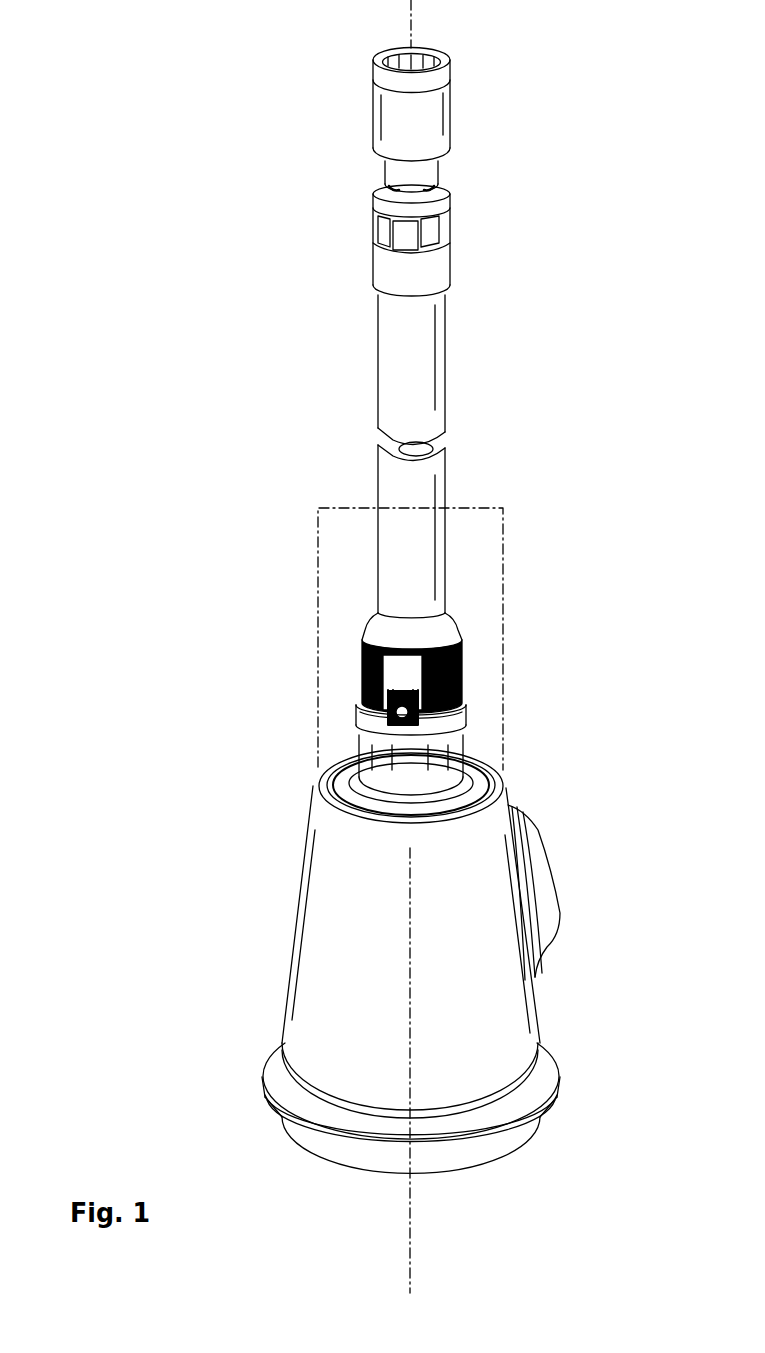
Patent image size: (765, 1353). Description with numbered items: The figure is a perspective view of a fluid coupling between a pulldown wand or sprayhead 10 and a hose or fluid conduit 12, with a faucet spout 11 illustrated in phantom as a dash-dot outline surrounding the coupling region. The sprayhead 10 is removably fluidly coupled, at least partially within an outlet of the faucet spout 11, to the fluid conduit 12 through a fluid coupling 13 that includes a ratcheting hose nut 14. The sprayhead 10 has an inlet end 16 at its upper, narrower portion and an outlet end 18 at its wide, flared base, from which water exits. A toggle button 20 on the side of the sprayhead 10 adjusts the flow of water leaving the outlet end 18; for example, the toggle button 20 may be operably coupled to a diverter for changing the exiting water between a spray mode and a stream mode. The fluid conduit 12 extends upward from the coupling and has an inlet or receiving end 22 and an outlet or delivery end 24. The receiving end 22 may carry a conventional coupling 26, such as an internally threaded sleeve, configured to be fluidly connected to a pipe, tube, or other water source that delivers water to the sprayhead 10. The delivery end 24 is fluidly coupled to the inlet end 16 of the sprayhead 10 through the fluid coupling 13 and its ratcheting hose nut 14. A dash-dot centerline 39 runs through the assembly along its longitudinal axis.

The sprayhead 10 is at (292, 915).
The faucet spout 11 is at (505, 553).
The fluid conduit 12 is at (378, 358).
The fluid coupling 13 is at (340, 707).
The ratcheting hose nut 14 is at (463, 673).
The inlet end 16 is at (478, 732).
The outlet end 18 is at (508, 1168).
The toggle button 20 is at (560, 910).
The receiving end 22 is at (349, 169).
The delivery end 24 is at (356, 609).
The conventional coupling 26 is at (452, 112).
The longitudinal axis 39 is at (409, 1272).